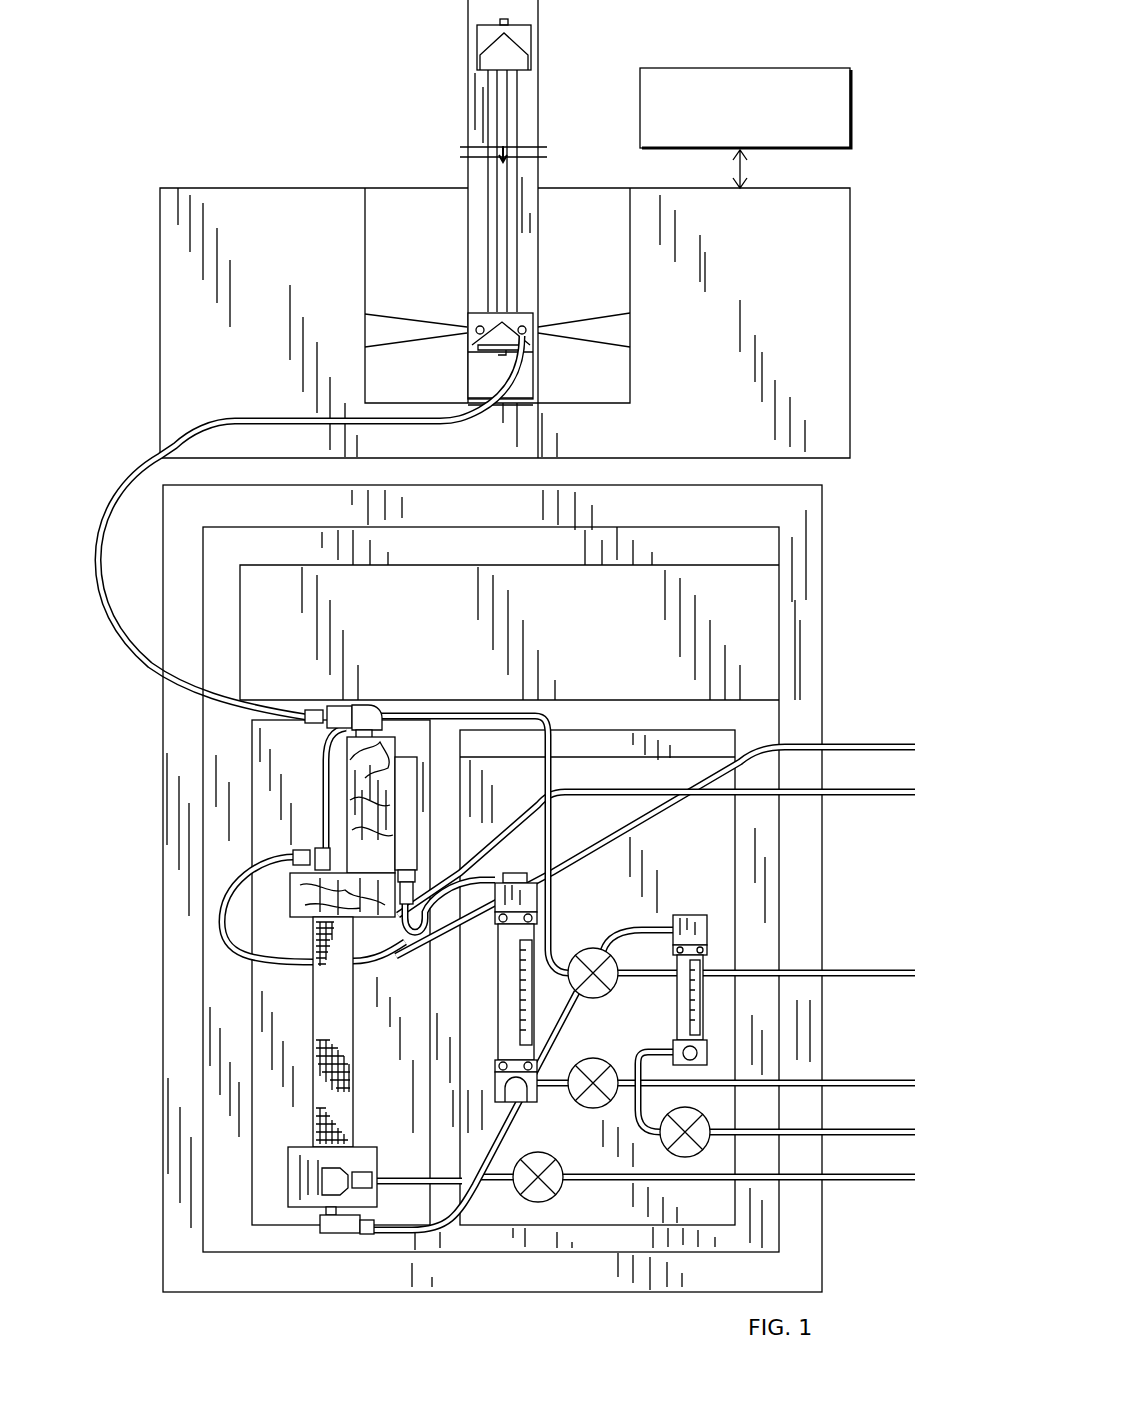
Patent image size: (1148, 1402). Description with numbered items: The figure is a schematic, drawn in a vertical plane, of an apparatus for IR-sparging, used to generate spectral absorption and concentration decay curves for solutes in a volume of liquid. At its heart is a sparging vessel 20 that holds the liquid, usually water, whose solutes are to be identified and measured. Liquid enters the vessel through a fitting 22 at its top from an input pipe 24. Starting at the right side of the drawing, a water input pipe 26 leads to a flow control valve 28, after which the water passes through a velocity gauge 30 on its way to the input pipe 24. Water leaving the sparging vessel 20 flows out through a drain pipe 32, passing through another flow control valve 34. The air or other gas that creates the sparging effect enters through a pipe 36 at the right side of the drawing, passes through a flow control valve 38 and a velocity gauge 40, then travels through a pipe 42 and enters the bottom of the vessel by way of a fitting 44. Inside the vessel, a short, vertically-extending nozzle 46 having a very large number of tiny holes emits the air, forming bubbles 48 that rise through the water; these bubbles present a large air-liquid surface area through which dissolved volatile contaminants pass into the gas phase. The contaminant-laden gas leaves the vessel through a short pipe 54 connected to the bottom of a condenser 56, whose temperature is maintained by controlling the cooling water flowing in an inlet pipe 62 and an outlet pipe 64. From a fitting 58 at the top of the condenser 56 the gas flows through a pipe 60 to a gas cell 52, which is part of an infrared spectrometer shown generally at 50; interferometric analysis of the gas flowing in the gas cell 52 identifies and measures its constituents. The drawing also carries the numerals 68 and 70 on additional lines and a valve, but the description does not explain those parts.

The sparging vessel 20 is at (279, 1039).
The fitting 22 is at (320, 846).
The input pipe 24 is at (232, 958).
The water input pipe 26 is at (846, 1079).
The flow control valve 28 is at (590, 1057).
The velocity gauge 30 is at (495, 990).
The drain pipe 32 is at (878, 1182).
The flow control valve 34 is at (555, 1195).
The pipe 36 is at (876, 1130).
The flow control valve 38 is at (680, 1152).
The velocity gauge 40 is at (708, 932).
The pipe 42 is at (412, 1248).
The fitting 44 is at (332, 1240).
The nozzle 46 is at (298, 1141).
The bubbles 48 is at (313, 1052).
The infrared spectrometer 50 is at (822, 336).
The gas cell 52 is at (562, 106).
The short pipe 54 is at (296, 914).
The condenser 56 is at (388, 752).
The fitting 58 is at (356, 710).
The pipe 60 is at (108, 495).
The inlet pipe 62 is at (840, 796).
The outlet pipe 64 is at (848, 743).
The gas line 68 is at (842, 969).
The valve 70 is at (590, 948).